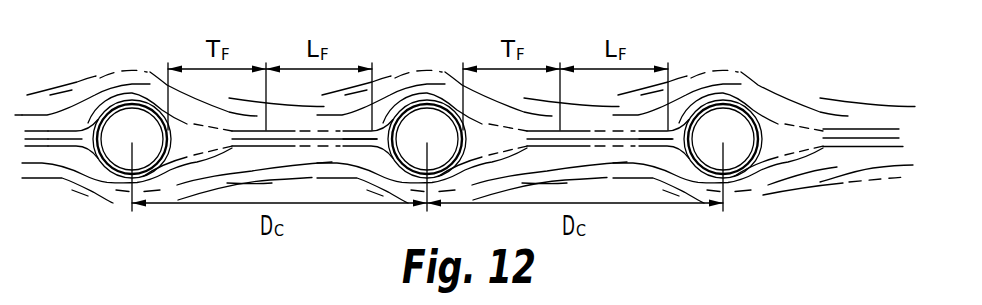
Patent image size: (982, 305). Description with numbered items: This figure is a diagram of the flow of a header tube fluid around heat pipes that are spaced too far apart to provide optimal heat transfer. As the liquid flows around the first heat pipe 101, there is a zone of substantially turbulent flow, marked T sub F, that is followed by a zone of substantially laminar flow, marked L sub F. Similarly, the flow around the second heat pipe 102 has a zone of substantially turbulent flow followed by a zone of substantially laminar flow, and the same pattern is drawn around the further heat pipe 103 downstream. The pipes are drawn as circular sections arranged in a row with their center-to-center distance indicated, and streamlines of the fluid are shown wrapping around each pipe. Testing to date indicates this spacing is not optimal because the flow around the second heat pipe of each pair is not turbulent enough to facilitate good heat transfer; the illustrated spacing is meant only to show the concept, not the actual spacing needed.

The first heat pipe 101 is at (113, 132).
The second heat pipe 102 is at (440, 155).
The third tube 103 is at (733, 147).